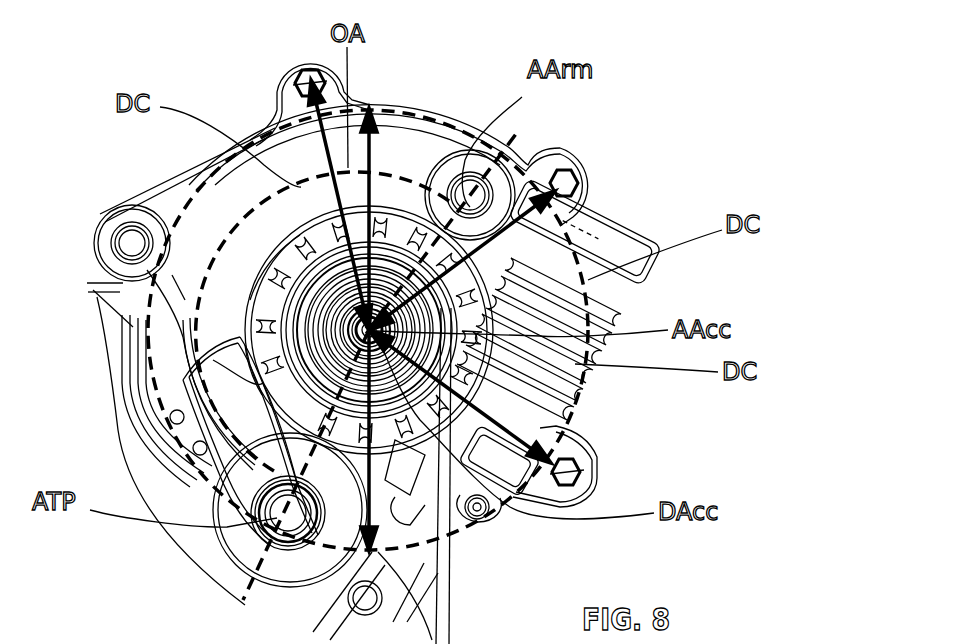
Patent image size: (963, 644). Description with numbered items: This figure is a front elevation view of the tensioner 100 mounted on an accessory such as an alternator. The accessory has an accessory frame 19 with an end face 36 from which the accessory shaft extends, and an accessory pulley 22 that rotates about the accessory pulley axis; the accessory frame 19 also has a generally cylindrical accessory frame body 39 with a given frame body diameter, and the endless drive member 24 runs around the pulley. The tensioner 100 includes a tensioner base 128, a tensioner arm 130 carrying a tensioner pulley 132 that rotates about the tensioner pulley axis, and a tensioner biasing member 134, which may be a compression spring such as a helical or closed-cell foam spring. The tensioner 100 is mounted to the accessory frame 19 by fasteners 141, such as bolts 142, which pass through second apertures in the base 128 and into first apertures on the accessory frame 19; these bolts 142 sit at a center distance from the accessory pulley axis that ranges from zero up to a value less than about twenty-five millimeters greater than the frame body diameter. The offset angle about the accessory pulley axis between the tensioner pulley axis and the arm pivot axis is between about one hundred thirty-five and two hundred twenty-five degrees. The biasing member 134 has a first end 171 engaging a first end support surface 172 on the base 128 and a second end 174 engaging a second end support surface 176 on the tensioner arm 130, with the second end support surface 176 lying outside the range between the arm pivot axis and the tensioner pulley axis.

The tensioner 100 is at (671, 111).
The accessory frame 19 is at (396, 494).
The accessory pulley 22 is at (433, 347).
The belt 24 is at (447, 580).
The end face 36 is at (495, 324).
The accessory frame body 39 is at (481, 516).
The tensioner base 128 is at (583, 447).
The tensioner arm 130 is at (397, 147).
The tensioner pulley 132 is at (227, 573).
The tensioner biasing member 134 is at (177, 325).
The fasteners 141 is at (297, 67).
The bolts 142 is at (310, 83).
The first end 171 is at (600, 412).
The first end support surface 172 is at (590, 424).
The second end 174 is at (480, 312).
The second end support surface 176 is at (618, 300).